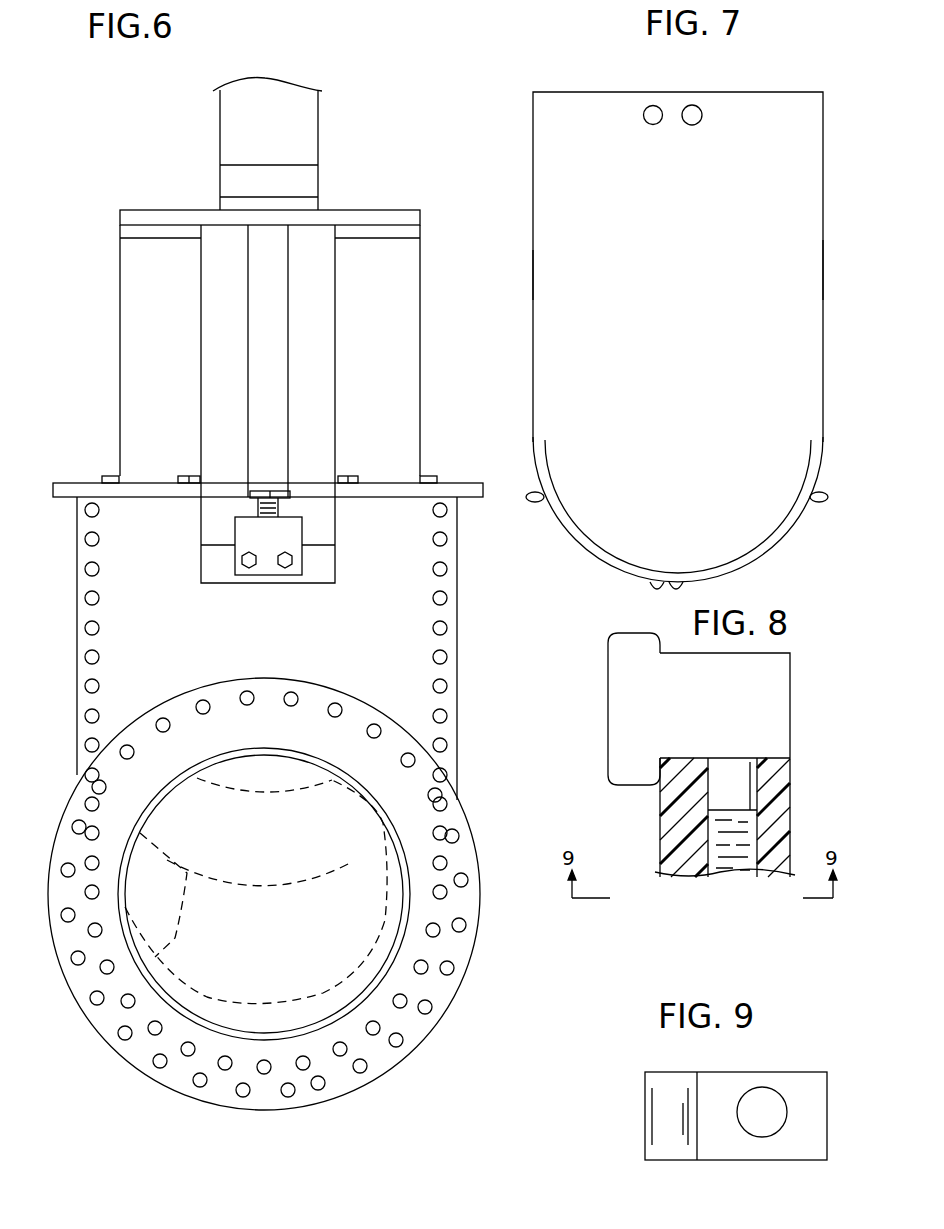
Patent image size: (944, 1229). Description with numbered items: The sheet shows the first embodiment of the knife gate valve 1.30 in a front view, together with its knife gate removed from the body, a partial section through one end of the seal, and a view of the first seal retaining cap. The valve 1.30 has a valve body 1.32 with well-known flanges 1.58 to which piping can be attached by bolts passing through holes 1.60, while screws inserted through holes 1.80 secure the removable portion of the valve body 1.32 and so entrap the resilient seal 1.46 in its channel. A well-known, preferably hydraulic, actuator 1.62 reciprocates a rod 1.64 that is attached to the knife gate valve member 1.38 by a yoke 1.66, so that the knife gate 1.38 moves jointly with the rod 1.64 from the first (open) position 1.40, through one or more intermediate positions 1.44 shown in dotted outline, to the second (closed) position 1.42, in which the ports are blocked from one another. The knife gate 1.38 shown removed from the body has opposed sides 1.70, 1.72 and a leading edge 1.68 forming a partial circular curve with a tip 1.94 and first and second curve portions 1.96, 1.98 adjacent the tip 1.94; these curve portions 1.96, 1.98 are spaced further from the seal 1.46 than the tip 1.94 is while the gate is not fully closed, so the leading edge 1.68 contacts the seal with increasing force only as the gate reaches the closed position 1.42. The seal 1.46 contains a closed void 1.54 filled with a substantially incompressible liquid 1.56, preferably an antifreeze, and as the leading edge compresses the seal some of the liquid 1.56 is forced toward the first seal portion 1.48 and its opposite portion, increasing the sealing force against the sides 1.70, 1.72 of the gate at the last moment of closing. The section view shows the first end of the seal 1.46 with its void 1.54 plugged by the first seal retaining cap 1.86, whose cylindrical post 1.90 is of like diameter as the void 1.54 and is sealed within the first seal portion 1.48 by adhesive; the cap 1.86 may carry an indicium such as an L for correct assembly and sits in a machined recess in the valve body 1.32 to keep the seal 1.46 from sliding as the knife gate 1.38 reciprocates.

In FIG. 6, the valve 1.30 is at (108, 471).
In FIG. 6, the valve body 1.32 is at (412, 618).
In FIG. 6, the knife gate valve member 1.38 is at (285, 1017).
In FIG. 7, the knife gate valve member 1.38 is at (550, 177).
In FIG. 6, the first (open) position 1.40 is at (258, 812).
In FIG. 6, the second (closed) position 1.42 is at (213, 1013).
In FIG. 6, the intermediate position 1.44 is at (256, 892).
In FIG. 8, the resilient seal 1.46 is at (782, 787).
In FIG. 8, the first seal portion 1.48 is at (660, 792).
In FIG. 8, the closed void 1.54 is at (748, 838).
In FIG. 8, the liquid 1.56 is at (737, 855).
In FIG. 6, the flanges 1.58 is at (460, 942).
In FIG. 6, the holes 1.60 is at (438, 1000).
In FIG. 6, the actuator 1.62 is at (302, 140).
In FIG. 6, the rod 1.64 is at (275, 442).
In FIG. 6, the yoke 1.66 is at (288, 538).
In FIG. 7, the leading edge 1.68 is at (652, 583).
In FIG. 7, the first side of knife gate 1.70 is at (527, 292).
In FIG. 7, the second side of knife gate 1.72 is at (825, 265).
In FIG. 6, the holes 1.80 is at (440, 660).
In FIG. 8, the first seal retaining cap 1.86 is at (773, 700).
In FIG. 9, the first seal retaining cap 1.86 is at (708, 1085).
In FIG. 8, the cylindrical post 1.90 is at (730, 775).
In FIG. 9, the cylindrical post 1.90 is at (758, 1103).
In FIG. 7, the tip 1.94 is at (687, 583).
In FIG. 7, the first curve portion 1.96 is at (538, 495).
In FIG. 7, the second curve portion 1.98 is at (815, 502).